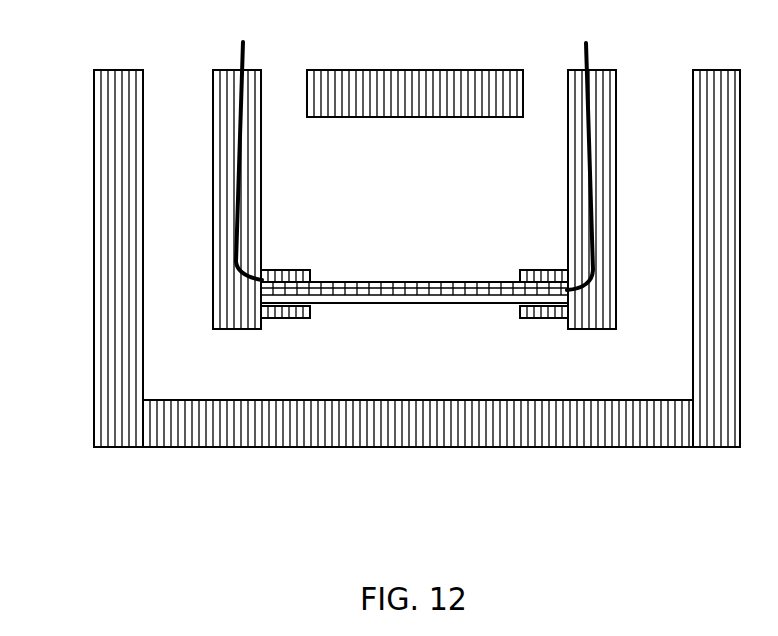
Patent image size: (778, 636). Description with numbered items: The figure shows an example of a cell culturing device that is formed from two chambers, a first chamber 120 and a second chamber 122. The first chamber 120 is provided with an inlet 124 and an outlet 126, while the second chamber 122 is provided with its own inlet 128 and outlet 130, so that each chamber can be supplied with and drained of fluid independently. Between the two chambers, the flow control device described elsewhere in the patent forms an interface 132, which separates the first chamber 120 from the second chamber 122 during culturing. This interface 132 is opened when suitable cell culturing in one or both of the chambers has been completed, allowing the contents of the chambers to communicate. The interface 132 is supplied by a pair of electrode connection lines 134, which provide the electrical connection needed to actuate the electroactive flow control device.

The first chamber 120 is at (383, 363).
The second chamber 122 is at (454, 173).
The inlet 124 is at (171, 87).
The outlet 126 is at (658, 133).
The inlet 128 is at (545, 100).
The outlet 130 is at (285, 96).
The interface 132 is at (412, 262).
The electrode connection lines 134 is at (240, 52).